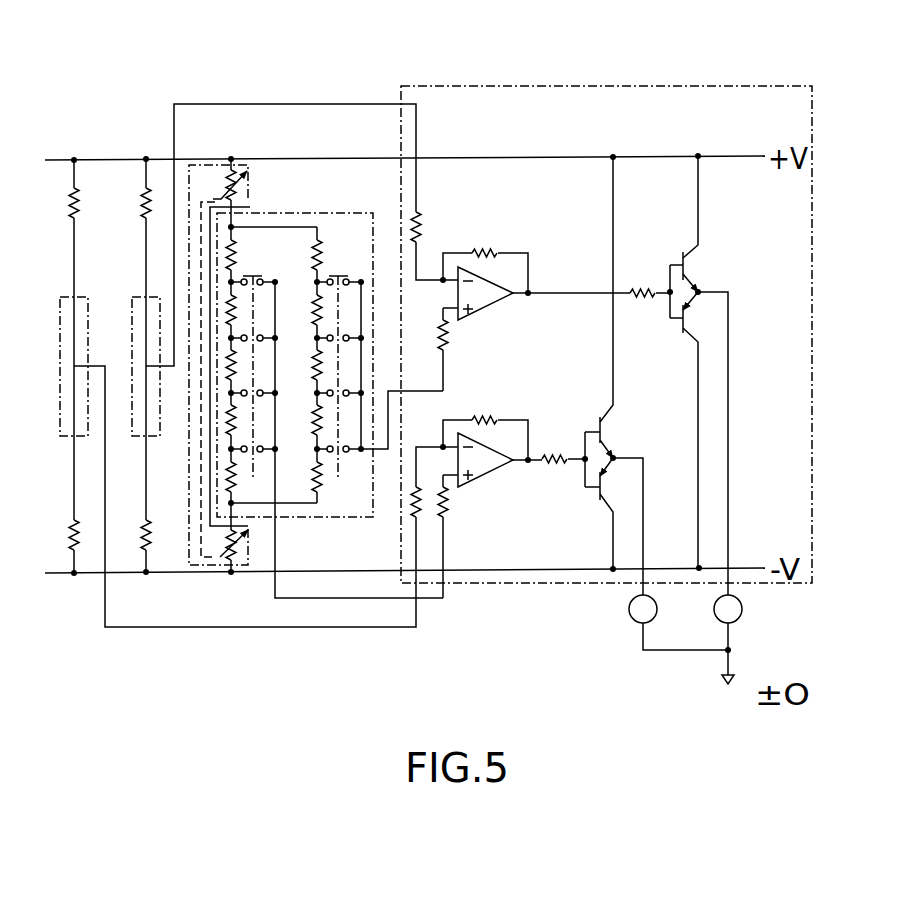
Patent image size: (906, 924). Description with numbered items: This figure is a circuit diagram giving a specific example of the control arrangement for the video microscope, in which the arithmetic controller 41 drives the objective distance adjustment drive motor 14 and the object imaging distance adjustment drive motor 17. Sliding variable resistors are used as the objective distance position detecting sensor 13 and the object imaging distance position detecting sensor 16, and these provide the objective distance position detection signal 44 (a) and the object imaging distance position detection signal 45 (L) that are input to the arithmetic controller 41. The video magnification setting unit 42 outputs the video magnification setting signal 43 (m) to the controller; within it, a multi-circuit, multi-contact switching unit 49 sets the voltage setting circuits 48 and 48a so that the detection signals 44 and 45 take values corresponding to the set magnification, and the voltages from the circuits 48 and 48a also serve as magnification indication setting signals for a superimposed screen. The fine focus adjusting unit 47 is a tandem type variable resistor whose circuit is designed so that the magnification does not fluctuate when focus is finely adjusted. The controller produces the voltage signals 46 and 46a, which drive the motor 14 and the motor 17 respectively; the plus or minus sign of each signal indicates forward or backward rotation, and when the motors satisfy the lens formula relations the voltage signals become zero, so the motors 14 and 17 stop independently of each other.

The objective distance position detecting sensor 13 is at (59, 321).
The object imaging distance position detecting sensor 16 is at (129, 311).
The arithmetic controller 41 is at (584, 85).
The video magnification setting unit 42 is at (297, 212).
The video magnification setting signal 43 is at (447, 381).
The objective distance position detection signal 44 is at (318, 631).
The object imaging distance position detection signal 45 is at (297, 100).
The voltage signal 46 is at (534, 434).
The voltage signal 46a is at (535, 291).
The fine focus adjusting unit 47 is at (190, 525).
The voltage setting circuit 48 is at (252, 271).
The voltage setting circuit 48a is at (323, 469).
The multi-circuit, multi-contact switching unit 49 is at (331, 271).
The objective distance adjustment drive motor 14 is at (632, 625).
The object imaging distance adjustment drive motor 17 is at (716, 624).